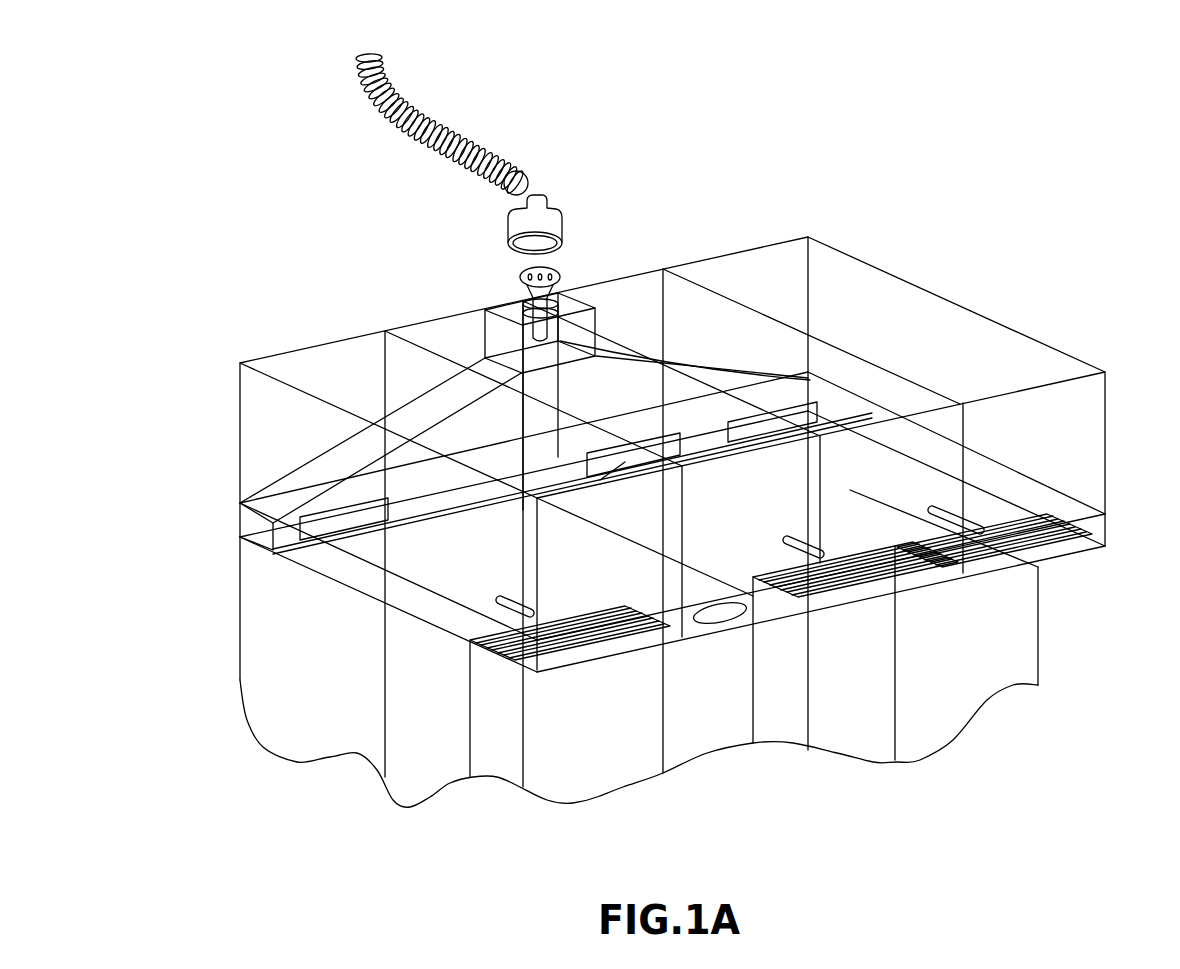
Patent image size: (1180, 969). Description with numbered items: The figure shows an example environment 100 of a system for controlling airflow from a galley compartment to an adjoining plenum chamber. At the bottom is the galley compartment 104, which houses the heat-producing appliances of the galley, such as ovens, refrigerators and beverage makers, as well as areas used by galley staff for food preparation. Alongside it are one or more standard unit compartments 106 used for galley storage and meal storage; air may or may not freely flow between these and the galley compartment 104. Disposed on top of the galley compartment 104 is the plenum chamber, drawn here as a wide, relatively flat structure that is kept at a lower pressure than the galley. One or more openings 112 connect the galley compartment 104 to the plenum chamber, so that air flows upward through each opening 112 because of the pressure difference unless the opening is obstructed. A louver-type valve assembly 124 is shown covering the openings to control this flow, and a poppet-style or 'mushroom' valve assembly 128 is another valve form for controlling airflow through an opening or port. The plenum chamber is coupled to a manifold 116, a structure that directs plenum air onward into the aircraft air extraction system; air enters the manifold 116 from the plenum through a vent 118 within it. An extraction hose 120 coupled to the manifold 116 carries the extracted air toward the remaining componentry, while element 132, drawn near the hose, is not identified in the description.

The example environment 100 is at (231, 46).
The galley compartment 104 is at (935, 718).
The standard unit compartment 106 is at (1098, 425).
The opening 112 is at (727, 603).
The manifold 116 is at (337, 445).
The vent 118 is at (773, 427).
The extraction hose 120 is at (432, 108).
The louver-type valve assembly 124 is at (600, 650).
The poppet-style valve assembly 128 is at (557, 272).
The coupling cap 132 is at (537, 197).